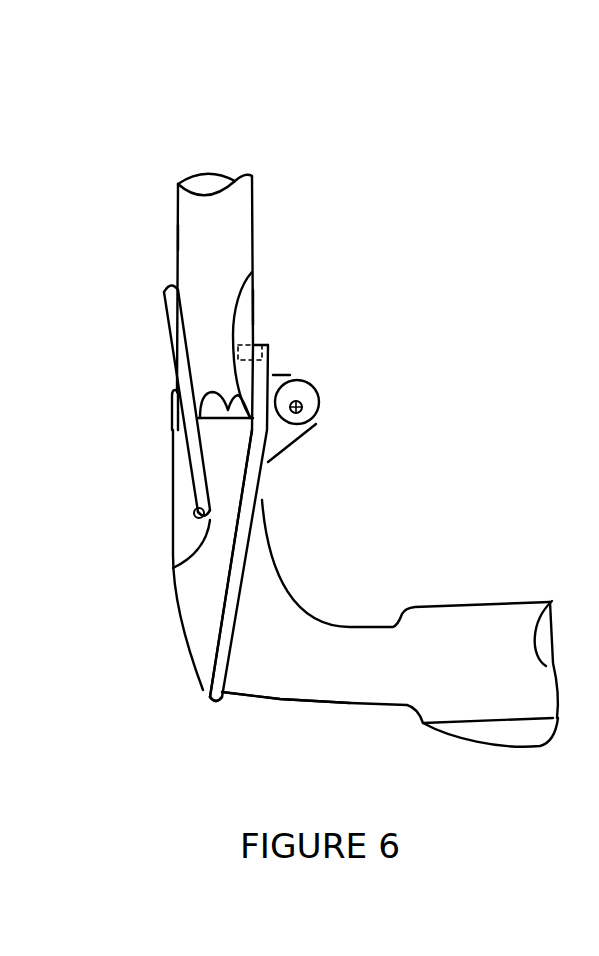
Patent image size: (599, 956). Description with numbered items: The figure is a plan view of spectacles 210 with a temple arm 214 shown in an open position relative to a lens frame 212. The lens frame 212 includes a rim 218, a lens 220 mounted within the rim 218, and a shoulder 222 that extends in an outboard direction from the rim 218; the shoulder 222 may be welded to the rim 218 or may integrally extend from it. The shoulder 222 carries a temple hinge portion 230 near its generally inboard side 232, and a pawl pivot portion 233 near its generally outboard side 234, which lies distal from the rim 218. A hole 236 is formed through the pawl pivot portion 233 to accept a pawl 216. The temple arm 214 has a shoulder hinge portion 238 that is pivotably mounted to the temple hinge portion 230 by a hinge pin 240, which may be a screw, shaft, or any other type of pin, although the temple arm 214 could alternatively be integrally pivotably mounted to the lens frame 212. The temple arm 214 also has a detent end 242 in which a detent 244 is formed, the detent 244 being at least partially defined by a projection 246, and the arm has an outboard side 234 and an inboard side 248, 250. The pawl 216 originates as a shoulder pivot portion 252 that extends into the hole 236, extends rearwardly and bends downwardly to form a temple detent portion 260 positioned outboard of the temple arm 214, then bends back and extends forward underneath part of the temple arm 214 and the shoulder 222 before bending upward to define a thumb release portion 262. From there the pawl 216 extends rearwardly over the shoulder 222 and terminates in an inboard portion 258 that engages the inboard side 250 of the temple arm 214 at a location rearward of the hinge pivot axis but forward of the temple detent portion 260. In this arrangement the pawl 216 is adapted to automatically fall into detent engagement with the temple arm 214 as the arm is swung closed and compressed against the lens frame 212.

The spectacles 210 is at (453, 217).
The lens frame 212 is at (389, 722).
The temple arm 214 is at (202, 188).
The pawl 216 is at (233, 588).
The rim 218 is at (432, 698).
The lens 220 is at (524, 737).
The shoulder 222 is at (270, 670).
The temple hinge portion 230 is at (313, 425).
The inboard side of the shoulder 232 is at (267, 477).
The pawl pivot portion 233 is at (192, 514).
The outboard side 234 is at (174, 492).
The hole 236 is at (187, 556).
The shoulder hinge portion 238 is at (280, 374).
The hinge pin 240 is at (302, 400).
The detent end 242 is at (217, 413).
The detent 244 is at (252, 272).
The projection 246 is at (175, 415).
The inboard side of the temple arm 248 is at (177, 237).
The inboard side of the temple arm 250 is at (260, 312).
The shoulder pivot portion 252 is at (193, 507).
The inboard portion 258 is at (263, 310).
The temple detent portion 260 is at (165, 280).
The thumb release portion 262 is at (207, 702).